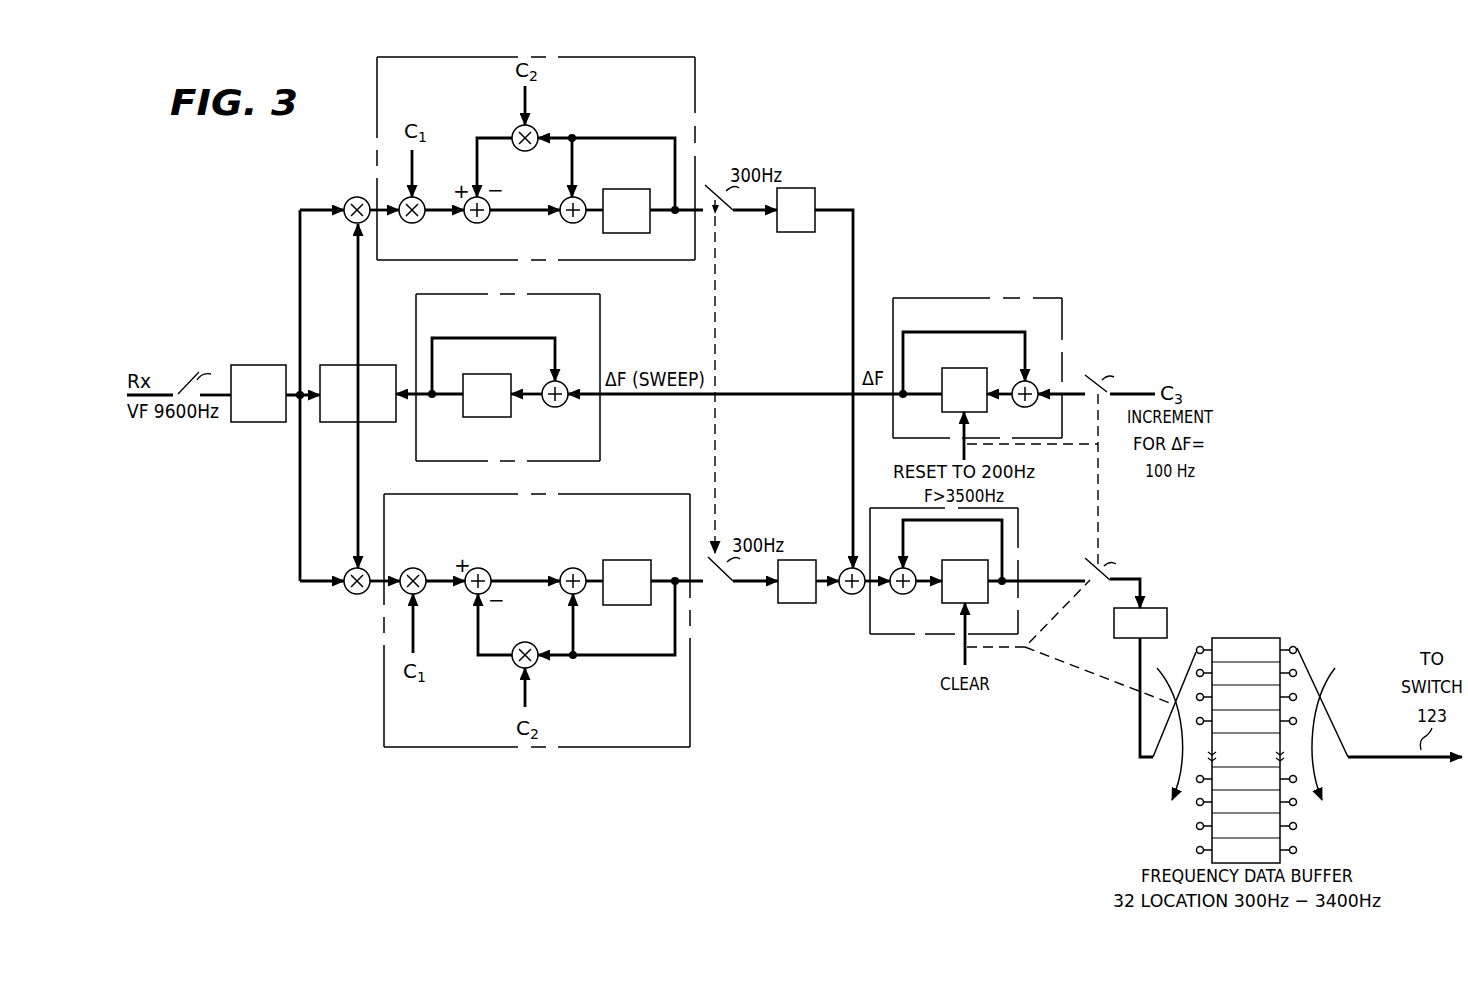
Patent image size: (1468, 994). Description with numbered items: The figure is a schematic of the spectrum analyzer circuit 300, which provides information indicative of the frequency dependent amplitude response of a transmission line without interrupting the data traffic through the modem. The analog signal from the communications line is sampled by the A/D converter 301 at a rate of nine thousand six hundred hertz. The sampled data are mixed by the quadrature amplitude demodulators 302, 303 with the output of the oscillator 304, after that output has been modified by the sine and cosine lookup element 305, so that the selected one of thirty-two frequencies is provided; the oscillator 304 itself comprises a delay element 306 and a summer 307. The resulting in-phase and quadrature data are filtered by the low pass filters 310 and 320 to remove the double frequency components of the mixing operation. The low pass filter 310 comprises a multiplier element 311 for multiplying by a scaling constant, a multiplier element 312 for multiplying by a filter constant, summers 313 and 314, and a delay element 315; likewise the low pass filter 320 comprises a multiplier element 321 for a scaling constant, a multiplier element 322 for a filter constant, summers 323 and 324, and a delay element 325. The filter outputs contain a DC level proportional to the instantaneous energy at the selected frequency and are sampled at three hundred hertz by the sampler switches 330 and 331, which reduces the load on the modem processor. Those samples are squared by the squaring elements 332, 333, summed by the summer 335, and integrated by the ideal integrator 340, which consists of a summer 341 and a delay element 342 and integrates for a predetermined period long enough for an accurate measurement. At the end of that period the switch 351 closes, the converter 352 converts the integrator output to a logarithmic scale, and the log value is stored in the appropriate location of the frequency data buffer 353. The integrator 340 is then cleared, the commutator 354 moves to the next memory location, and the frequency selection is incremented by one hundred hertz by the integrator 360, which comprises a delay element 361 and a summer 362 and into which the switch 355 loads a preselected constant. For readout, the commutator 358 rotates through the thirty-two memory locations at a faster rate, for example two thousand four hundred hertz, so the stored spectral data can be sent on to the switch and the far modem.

The spectrum analyzer circuit 300 is at (247, 172).
The A/D converter 301 is at (260, 365).
The quadrature amplitude demodulator 302 is at (357, 205).
The quadrature amplitude demodulator 303 is at (351, 593).
The oscillator 304 is at (463, 294).
The sine and cosine lookup element 305 is at (332, 365).
The delay element 306 is at (486, 372).
The summer 307 is at (546, 410).
The low pass filter 310 is at (635, 747).
The multiplier element 311 is at (411, 565).
The multiplier element 312 is at (523, 640).
The summer 313 is at (472, 566).
The summer 314 is at (568, 570).
The delay element 315 is at (630, 560).
The low pass filter 320 is at (695, 117).
The multiplier element 321 is at (425, 202).
The multiplier element 322 is at (509, 127).
The summer 323 is at (483, 223).
The summer 324 is at (566, 220).
The delay element 325 is at (611, 189).
The sampler switch 330 is at (727, 220).
The sampler switch 331 is at (711, 589).
The squaring element 332 is at (793, 233).
The squaring element 333 is at (797, 603).
The summer 335 is at (853, 594).
The ideal integrator 340 is at (1017, 558).
The summer 341 is at (904, 594).
The delay element 342 is at (976, 559).
The switch 351 is at (1113, 572).
The converter 352 is at (1114, 619).
The frequency data buffer 353 is at (1303, 844).
The commutator 354 is at (1191, 648).
The switch 355 is at (1099, 373).
The commutator 358 is at (1328, 718).
The integrator 360 is at (965, 300).
The delay element 361 is at (957, 368).
The summer 362 is at (1029, 405).